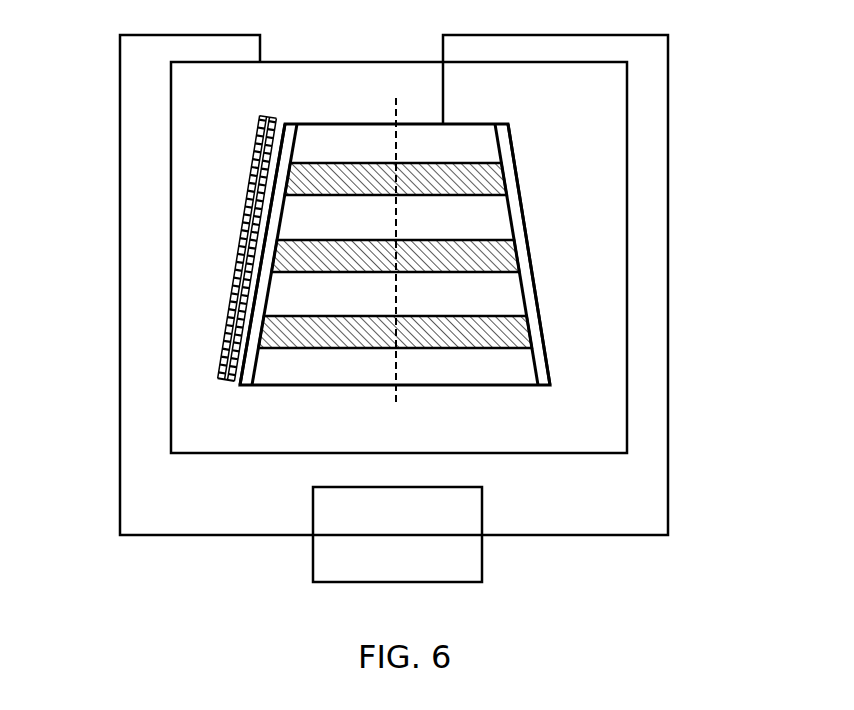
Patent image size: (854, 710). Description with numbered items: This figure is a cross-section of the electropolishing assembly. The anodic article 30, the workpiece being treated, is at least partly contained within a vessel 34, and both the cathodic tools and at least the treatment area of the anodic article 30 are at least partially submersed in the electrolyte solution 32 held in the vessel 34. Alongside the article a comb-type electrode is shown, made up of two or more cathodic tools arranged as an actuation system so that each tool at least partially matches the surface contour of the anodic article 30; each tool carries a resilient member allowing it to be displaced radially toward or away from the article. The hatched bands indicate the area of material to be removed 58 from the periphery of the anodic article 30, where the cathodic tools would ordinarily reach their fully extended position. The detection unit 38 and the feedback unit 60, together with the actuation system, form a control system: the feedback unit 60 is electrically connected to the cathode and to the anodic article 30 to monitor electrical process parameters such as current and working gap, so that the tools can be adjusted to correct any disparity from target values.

The anodic article 30 is at (330, 135).
The electrolyte solution 32 is at (228, 178).
The vessel 34 is at (627, 107).
The detection unit 38 is at (165, 248).
The area of material to be removed 58 is at (224, 327).
The feedback unit 60 is at (458, 555).